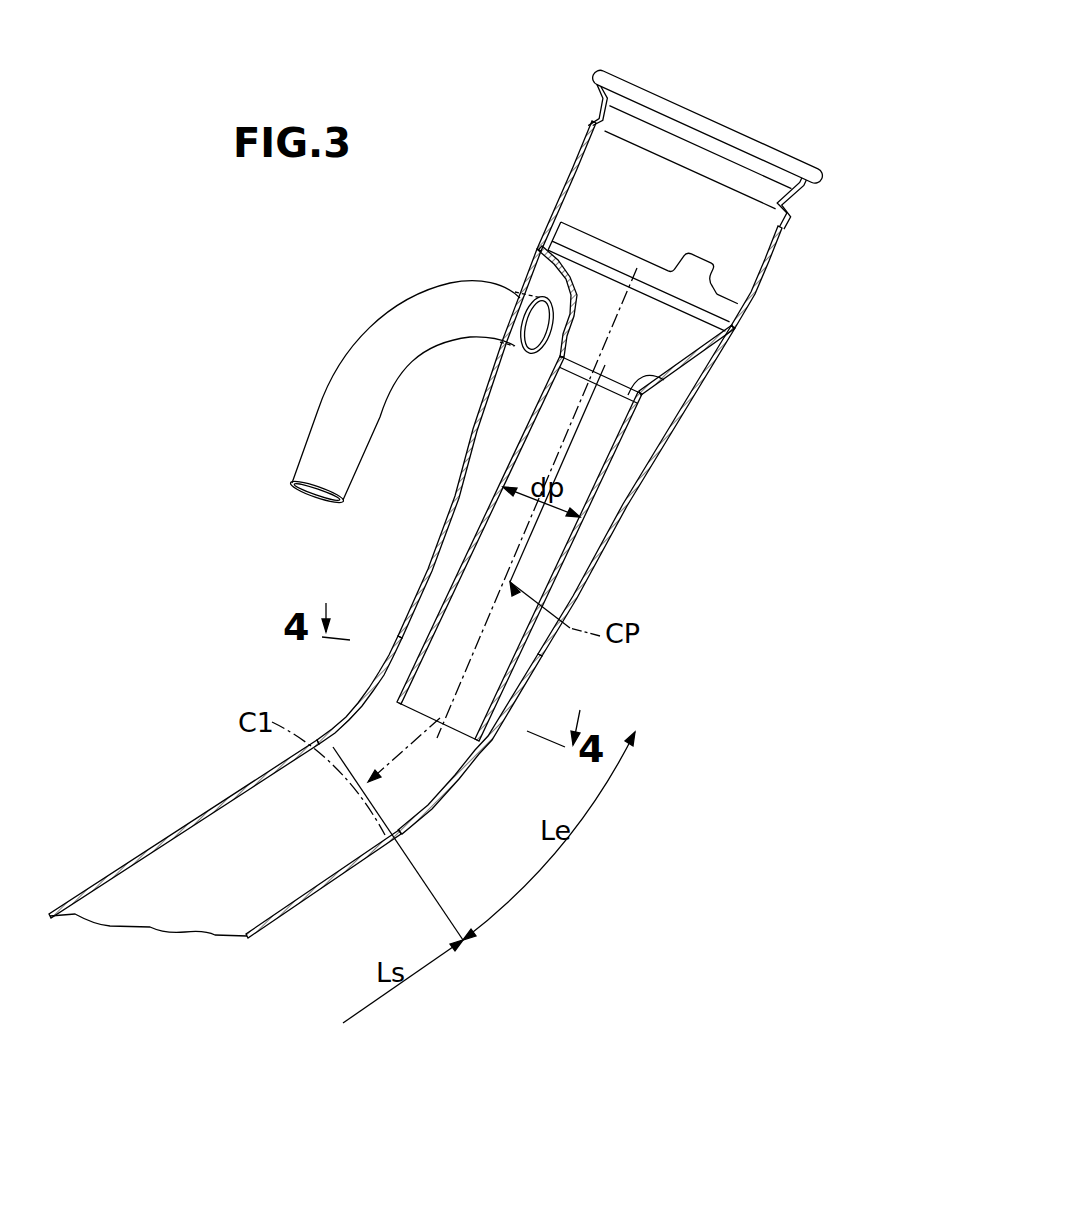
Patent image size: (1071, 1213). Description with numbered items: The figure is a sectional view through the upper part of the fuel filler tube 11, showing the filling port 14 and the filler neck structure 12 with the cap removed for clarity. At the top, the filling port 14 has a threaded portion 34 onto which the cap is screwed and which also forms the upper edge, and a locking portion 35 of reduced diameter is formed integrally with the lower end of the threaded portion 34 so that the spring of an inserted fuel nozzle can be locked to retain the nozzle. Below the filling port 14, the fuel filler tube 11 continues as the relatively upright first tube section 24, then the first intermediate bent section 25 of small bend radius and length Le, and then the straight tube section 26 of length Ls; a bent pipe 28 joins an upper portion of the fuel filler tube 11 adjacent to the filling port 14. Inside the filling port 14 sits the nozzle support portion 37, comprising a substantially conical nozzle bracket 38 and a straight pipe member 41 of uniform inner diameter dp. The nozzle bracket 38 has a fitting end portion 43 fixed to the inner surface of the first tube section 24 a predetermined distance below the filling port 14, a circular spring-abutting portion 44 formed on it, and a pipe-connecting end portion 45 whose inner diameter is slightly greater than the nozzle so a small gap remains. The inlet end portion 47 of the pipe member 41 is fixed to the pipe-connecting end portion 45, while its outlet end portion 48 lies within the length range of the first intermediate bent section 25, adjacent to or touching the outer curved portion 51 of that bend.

The fuel filler tube 11 is at (165, 722).
The filler neck structure 12 is at (608, 205).
The filling port 14 is at (680, 128).
The first tube section 24 is at (465, 447).
The first intermediate bent section 25 is at (372, 692).
The straight tube section 26 is at (183, 827).
The bent pipe 28 is at (313, 420).
The threaded portion 34 is at (597, 76).
The locking portion 35 is at (717, 170).
The nozzle support portion 37 is at (517, 447).
The nozzle bracket 38 is at (538, 255).
The pipe member 41 is at (530, 397).
The fitting end portion 43 is at (560, 223).
The spring-abutting portion 44 is at (718, 260).
The pipe-connecting end portion 45 is at (650, 378).
The inlet end portion 47 is at (630, 420).
The outlet end portion 48 is at (462, 748).
The outer curved portion 51 is at (428, 812).